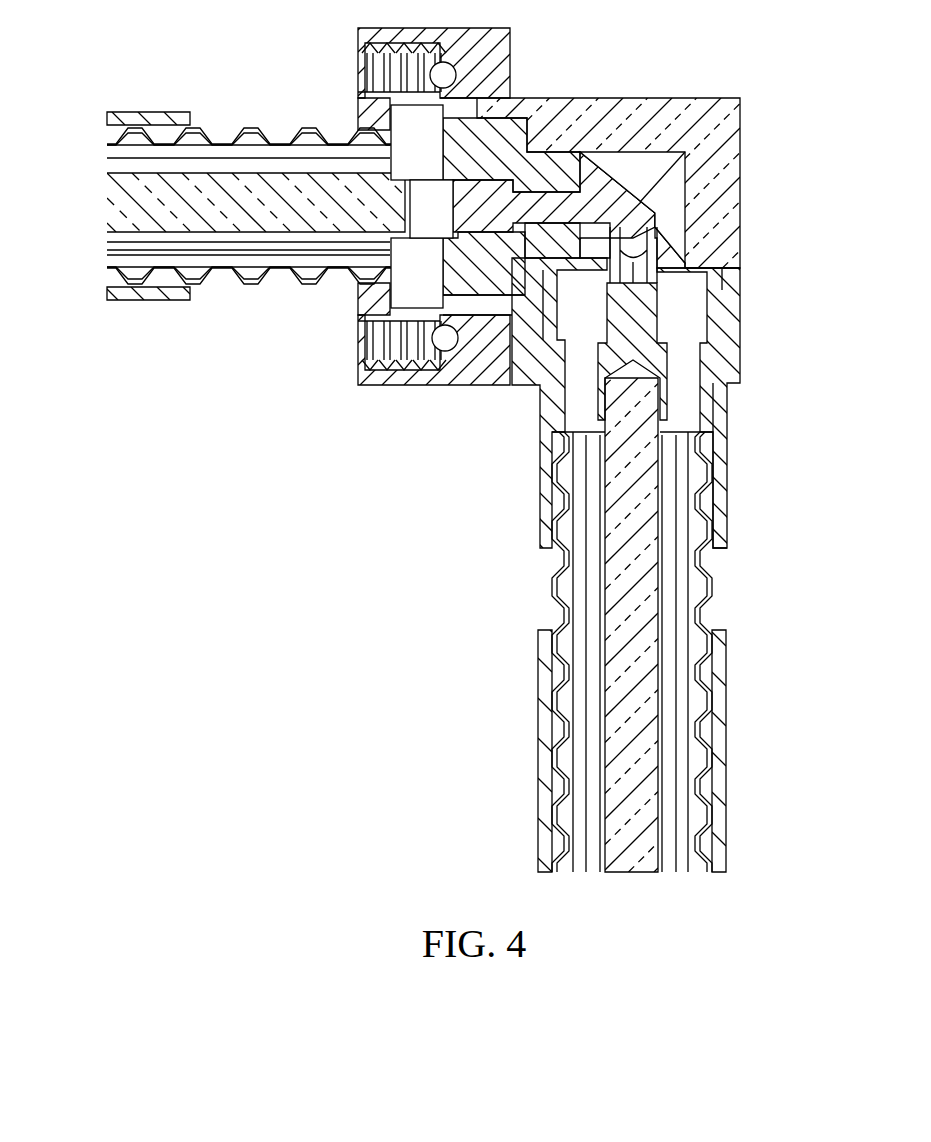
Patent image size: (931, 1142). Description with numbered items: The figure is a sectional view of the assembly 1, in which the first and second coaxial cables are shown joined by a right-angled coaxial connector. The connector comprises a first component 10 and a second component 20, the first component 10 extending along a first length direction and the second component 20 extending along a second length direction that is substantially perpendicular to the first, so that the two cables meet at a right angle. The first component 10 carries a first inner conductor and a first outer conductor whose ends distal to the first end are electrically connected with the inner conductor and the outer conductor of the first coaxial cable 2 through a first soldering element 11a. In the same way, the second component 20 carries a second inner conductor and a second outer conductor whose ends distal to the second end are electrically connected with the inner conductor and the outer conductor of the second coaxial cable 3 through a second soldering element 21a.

The assembly 1 is at (810, 110).
The first coaxial cable 2 is at (175, 293).
The second coaxial cable 3 is at (677, 657).
The first component 10 is at (608, 123).
The first soldering element 11a is at (367, 295).
The second component 20 is at (720, 257).
The second soldering element 21a is at (727, 497).